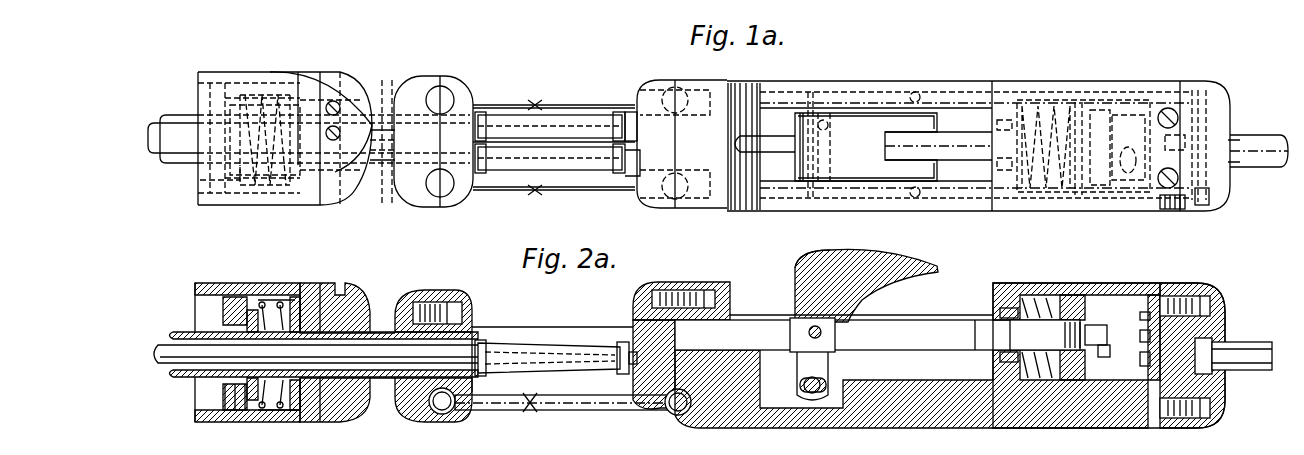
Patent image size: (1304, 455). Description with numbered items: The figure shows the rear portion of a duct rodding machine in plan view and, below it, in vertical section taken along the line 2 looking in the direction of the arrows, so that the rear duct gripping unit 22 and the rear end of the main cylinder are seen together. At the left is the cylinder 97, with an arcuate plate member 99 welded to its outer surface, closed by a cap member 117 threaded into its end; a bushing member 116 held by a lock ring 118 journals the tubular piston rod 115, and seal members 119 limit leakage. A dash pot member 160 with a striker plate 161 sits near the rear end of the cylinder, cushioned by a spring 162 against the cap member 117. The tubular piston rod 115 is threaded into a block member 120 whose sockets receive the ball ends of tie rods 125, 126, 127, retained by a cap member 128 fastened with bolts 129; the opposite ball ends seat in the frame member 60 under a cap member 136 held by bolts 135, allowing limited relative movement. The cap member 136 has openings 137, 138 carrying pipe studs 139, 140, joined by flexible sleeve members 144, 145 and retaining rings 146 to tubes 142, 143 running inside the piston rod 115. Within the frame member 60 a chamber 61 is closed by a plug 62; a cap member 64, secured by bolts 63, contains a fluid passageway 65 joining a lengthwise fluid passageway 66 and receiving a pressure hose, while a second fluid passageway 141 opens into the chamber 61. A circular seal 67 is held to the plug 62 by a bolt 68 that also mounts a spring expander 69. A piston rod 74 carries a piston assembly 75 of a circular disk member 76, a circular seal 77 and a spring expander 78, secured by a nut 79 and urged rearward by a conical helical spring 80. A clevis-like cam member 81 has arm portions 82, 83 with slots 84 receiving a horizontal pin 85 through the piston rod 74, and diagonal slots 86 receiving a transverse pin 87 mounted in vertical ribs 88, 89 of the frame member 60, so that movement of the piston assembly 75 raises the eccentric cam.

In FIG. 1A, the section line 2 is at (136, 140).
In FIG. 2A, the rear duct gripping unit 22 is at (1001, 265).
In FIG. 2A, the frame member 60 is at (700, 284).
In FIG. 1A, the chamber 61 is at (1108, 100).
In FIG. 2A, the chamber 61 is at (1130, 296).
In FIG. 2A, the plug 62 is at (1165, 400).
In FIG. 1A, the bolts 63 is at (1205, 207).
In FIG. 2A, the bolts 63 is at (1195, 415).
In FIG. 1A, the cap member 64 is at (1222, 92).
In FIG. 2A, the cap member 64 is at (1222, 318).
In FIG. 1A, the fluid passageway 65 is at (1200, 90).
In FIG. 2A, the fluid passageway 65 is at (1225, 380).
In FIG. 1A, the fluid passageway 66 is at (998, 92).
In FIG. 2A, the fluid passageway 66 is at (1009, 335).
In FIG. 1A, the circular seal 67 is at (1255, 178).
In FIG. 2A, the circular seal 67 is at (1128, 316).
In FIG. 1A, the bolt 68 is at (1168, 210).
In FIG. 2A, the bolt 68 is at (1138, 336).
In FIG. 1A, the spring expander 69 is at (1180, 132).
In FIG. 2A, the spring expander 69 is at (1138, 360).
In FIG. 1A, the piston rod 74 is at (958, 162).
In FIG. 2A, the piston rod 74 is at (908, 330).
In FIG. 2A, the piston assembly 75 is at (1108, 298).
In FIG. 1A, the circular disk member 76 is at (1058, 92).
In FIG. 2A, the circular disk member 76 is at (1062, 300).
In FIG. 1A, the circular seal 77 is at (1082, 190).
In FIG. 2A, the circular seal 77 is at (1070, 298).
In FIG. 1A, the spring expander 78 is at (1104, 190).
In FIG. 2A, the spring expander 78 is at (1096, 318).
In FIG. 1A, the nut 79 is at (1123, 141).
In FIG. 2A, the nut 79 is at (1100, 360).
In FIG. 1A, the conical helical spring 80 is at (1035, 92).
In FIG. 2A, the conical helical spring 80 is at (1035, 385).
In FIG. 1A, the cam member 81 is at (838, 185).
In FIG. 2A, the cam member 81 is at (805, 262).
In FIG. 1A, the arm portion 82 is at (868, 182).
In FIG. 1A, the arm portion 83 is at (830, 115).
In FIG. 2A, the arm portion 83 is at (905, 268).
In FIG. 2A, the slots 84 is at (832, 330).
In FIG. 1A, the horizontal pin 85 is at (826, 122).
In FIG. 2A, the horizontal pin 85 is at (812, 330).
In FIG. 2A, the slots 86 is at (803, 390).
In FIG. 1A, the transverse pin 87 is at (812, 190).
In FIG. 2A, the transverse pin 87 is at (815, 392).
In FIG. 1A, the vertical rib 88 is at (782, 200).
In FIG. 1A, the vertical rib 89 is at (790, 82).
In FIG. 1A, the cylinder 97 is at (200, 78).
In FIG. 2A, the cylinder 97 is at (205, 283).
In FIG. 1A, the arcuate plate member 99 is at (300, 72).
In FIG. 1A, the tubular piston rod 115 is at (388, 205).
In FIG. 2A, the tubular piston rod 115 is at (378, 330).
In FIG. 2A, the bushing member 116 is at (355, 292).
In FIG. 1A, the cap member 117 is at (325, 200).
In FIG. 2A, the cap member 117 is at (340, 290).
In FIG. 2A, the lock ring 118 is at (358, 415).
In FIG. 2A, the seal members 119 is at (308, 300).
In FIG. 1A, the block member 120 is at (420, 80).
In FIG. 2A, the block member 120 is at (415, 292).
In FIG. 2A, the tie rod 125 is at (548, 412).
In FIG. 1A, the tie rod 126 is at (548, 182).
In FIG. 1A, the tie rod 127 is at (552, 100).
In FIG. 2A, the tie rod 127 is at (548, 330).
In FIG. 2A, the cap member 128 is at (448, 414).
In FIG. 1A, the bolts 129 is at (440, 198).
In FIG. 2A, the bolts 129 is at (445, 298).
In FIG. 1A, the bolts 135 is at (688, 200).
In FIG. 2A, the bolts 135 is at (655, 292).
In FIG. 2A, the cap member 136 is at (633, 322).
In FIG. 1A, the opening 137 is at (665, 198).
In FIG. 1A, the opening 138 is at (668, 88).
In FIG. 1A, the pipe stud 139 is at (632, 178).
In FIG. 2A, the pipe stud 139 is at (668, 414).
In FIG. 1A, the pipe stud 140 is at (630, 110).
In FIG. 1A, the fluid passageway 141 is at (725, 200).
In FIG. 1A, the tube 142 is at (395, 178).
In FIG. 2A, the tube 142 is at (157, 345).
In FIG. 1A, the tube 143 is at (380, 82).
In FIG. 1A, the flexible sleeve member 144 is at (508, 172).
In FIG. 2A, the flexible sleeve member 144 is at (503, 345).
In FIG. 1A, the flexible sleeve member 145 is at (512, 112).
In FIG. 1A, the retaining rings 146 is at (618, 174).
In FIG. 1A, the dash pot member 160 is at (255, 200).
In FIG. 2A, the dash pot member 160 is at (240, 300).
In FIG. 1A, the striker plate 161 is at (200, 182).
In FIG. 2A, the striker plate 161 is at (228, 382).
In FIG. 1A, the spring 162 is at (262, 82).
In FIG. 2A, the spring 162 is at (270, 302).